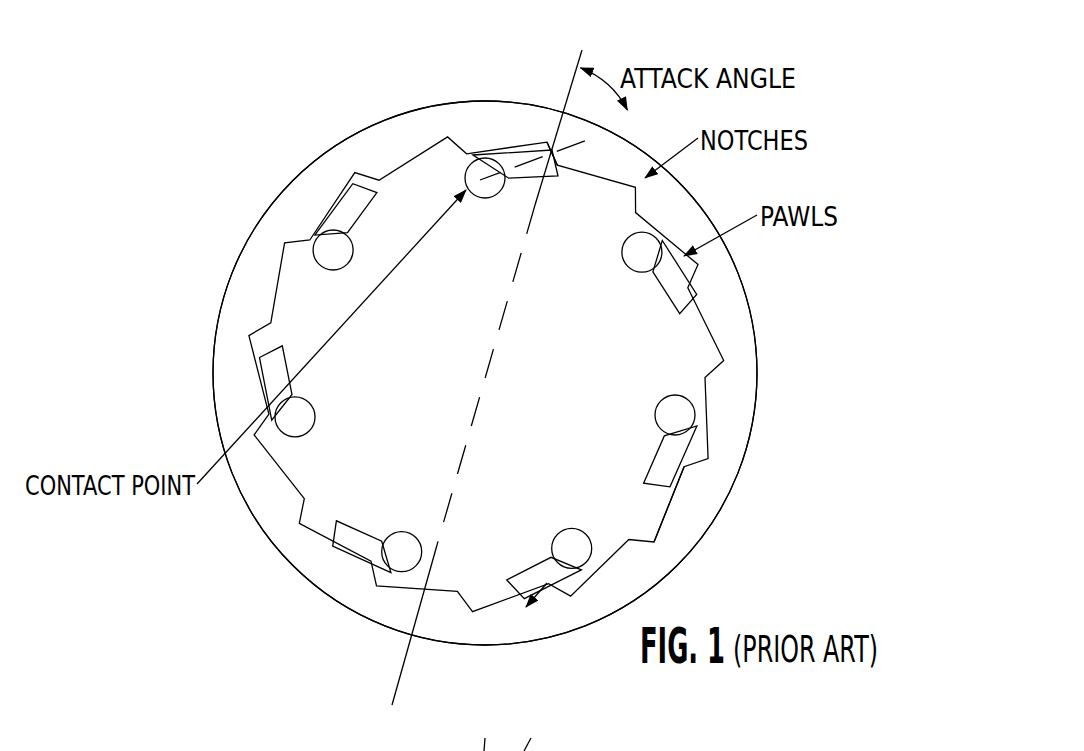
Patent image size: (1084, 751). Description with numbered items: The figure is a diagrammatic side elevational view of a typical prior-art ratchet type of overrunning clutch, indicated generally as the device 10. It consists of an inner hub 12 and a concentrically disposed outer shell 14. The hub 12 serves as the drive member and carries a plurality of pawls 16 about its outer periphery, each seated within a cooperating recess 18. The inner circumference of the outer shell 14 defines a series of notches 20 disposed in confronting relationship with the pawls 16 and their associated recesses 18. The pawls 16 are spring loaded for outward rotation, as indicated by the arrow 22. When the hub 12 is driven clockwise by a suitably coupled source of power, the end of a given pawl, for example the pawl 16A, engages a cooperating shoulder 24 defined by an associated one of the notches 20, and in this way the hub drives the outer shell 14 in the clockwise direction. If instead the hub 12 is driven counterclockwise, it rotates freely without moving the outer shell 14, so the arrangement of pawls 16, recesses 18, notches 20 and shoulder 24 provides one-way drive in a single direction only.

The ratchet type overrunning clutch 10 is at (176, 220).
The inner hub 12 is at (599, 350).
The outer shell 14 is at (722, 527).
The pawls 16 is at (684, 413).
The pawl 16A is at (481, 185).
The recesses 18 is at (648, 466).
The notches 20 is at (657, 527).
The arrow 22 is at (510, 552).
The shoulder 24 is at (547, 147).